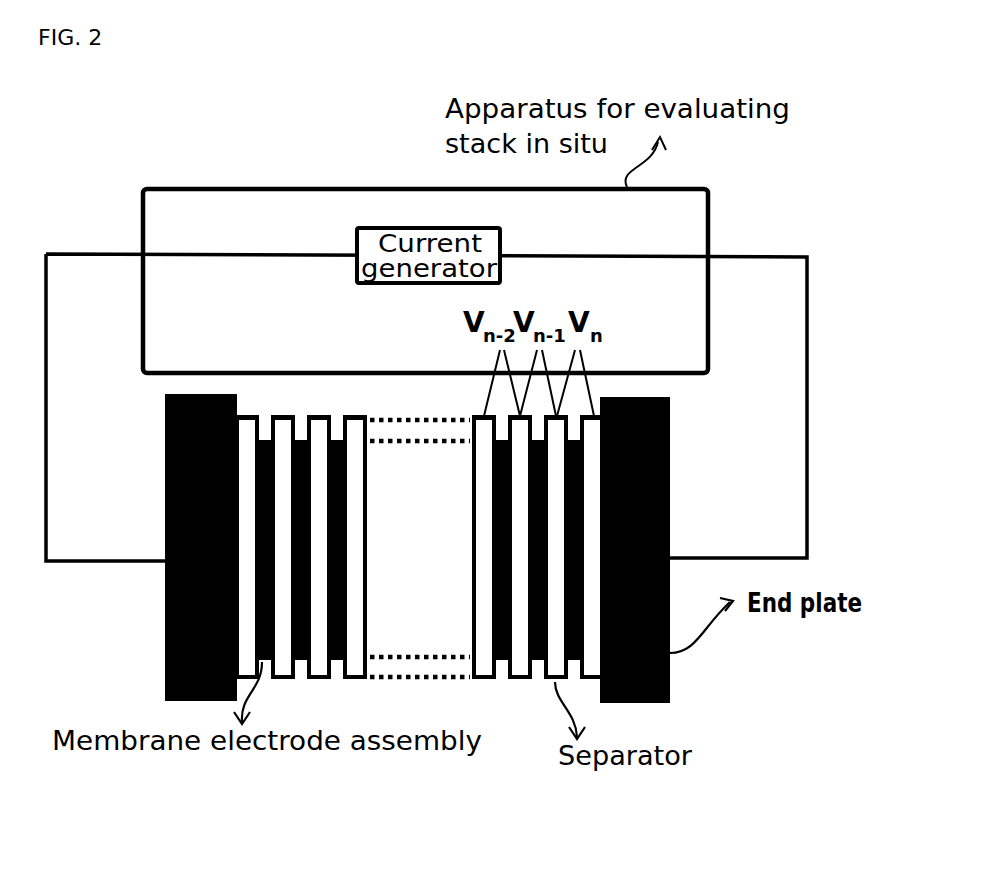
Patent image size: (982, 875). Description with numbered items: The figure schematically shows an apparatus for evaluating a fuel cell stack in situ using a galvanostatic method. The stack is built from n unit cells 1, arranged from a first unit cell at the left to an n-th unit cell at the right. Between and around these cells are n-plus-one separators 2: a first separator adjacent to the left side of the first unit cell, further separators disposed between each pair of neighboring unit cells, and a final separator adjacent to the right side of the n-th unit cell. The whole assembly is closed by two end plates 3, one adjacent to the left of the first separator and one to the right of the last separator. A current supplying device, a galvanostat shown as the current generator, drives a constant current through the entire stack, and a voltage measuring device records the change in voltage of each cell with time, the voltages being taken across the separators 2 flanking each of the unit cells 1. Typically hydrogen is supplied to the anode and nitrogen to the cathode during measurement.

The unit cells 1 is at (265, 494).
The separators 2 is at (307, 494).
The end plates 3 is at (345, 494).